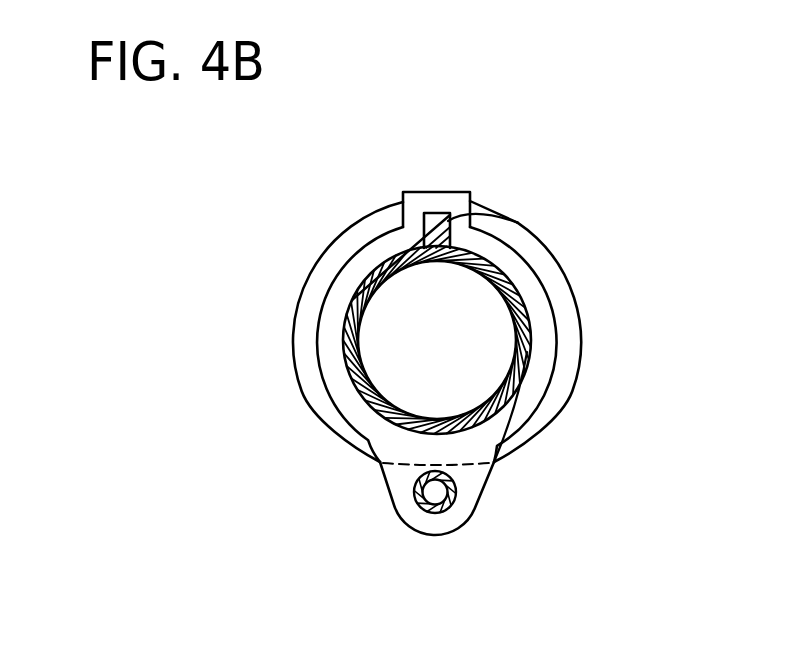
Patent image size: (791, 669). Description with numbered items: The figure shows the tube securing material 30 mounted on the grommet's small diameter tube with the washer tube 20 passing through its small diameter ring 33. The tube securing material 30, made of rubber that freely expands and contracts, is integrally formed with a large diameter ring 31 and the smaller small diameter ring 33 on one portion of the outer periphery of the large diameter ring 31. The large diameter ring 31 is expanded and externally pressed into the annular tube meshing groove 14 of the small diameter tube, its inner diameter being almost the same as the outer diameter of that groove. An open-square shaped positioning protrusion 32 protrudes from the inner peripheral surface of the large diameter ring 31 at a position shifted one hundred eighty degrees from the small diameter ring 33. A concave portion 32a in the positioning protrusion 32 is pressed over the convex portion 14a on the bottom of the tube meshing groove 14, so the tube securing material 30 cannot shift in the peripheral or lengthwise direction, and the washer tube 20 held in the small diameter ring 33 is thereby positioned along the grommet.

The tube meshing groove 14 is at (345, 343).
The convex portion 14a is at (434, 220).
The washer tube 20 is at (456, 492).
The tube securing material 30 is at (355, 240).
The large diameter ring 31 is at (556, 363).
The positioning protrusion 32 is at (458, 192).
The concave portion 32a is at (503, 220).
The small diameter ring 33 is at (430, 536).